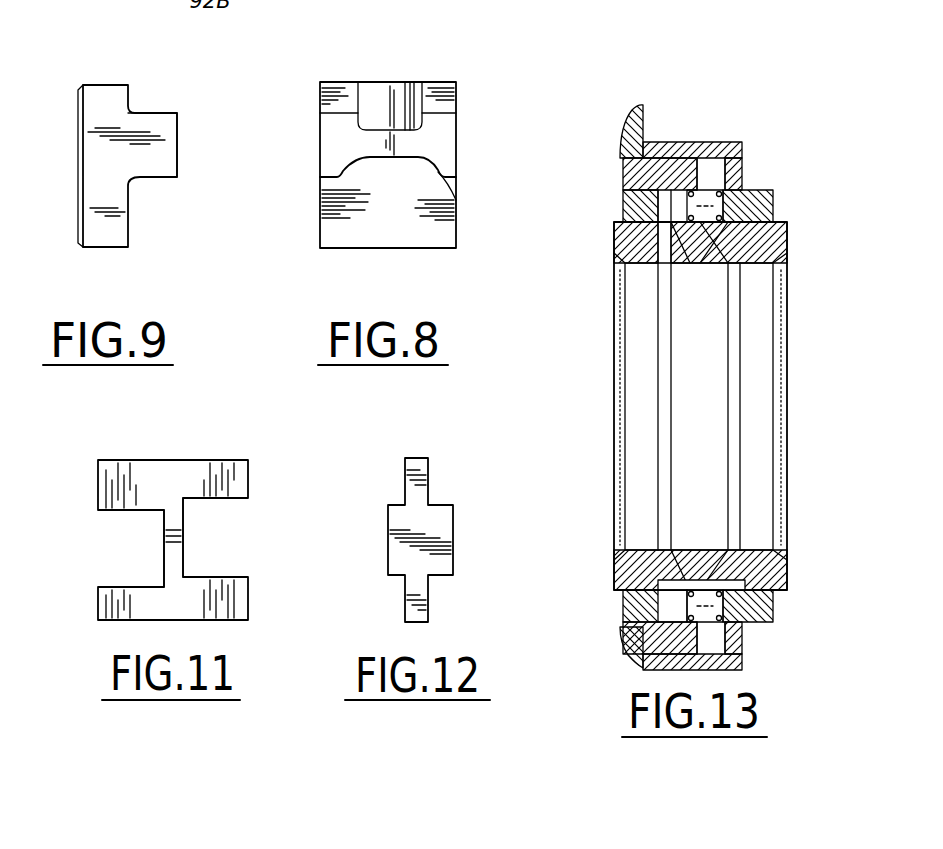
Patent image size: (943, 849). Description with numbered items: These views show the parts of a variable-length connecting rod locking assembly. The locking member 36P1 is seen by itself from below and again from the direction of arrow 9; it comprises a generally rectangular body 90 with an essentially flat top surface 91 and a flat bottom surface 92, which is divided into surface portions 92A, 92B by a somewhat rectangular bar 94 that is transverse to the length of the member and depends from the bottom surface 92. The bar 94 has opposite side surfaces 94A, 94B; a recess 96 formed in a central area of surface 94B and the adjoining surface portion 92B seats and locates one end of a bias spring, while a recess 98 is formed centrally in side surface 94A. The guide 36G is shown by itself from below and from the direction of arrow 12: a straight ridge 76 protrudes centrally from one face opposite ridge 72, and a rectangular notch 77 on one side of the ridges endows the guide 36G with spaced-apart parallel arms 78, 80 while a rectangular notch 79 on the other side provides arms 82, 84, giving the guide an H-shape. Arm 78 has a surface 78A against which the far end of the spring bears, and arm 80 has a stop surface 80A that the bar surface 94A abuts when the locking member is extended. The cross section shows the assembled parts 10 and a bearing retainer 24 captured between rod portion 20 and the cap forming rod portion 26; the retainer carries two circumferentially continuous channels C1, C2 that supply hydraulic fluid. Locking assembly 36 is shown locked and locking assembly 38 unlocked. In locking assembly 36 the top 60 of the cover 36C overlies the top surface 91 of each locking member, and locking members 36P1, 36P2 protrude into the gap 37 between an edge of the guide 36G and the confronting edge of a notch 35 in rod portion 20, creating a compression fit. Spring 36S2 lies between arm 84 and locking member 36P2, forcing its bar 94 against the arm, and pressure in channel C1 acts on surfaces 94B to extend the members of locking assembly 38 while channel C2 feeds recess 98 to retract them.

In FIG. 9, the gasket assembly 10 is at (125, 72).
In FIG. 8, the arrow 9 is at (290, 153).
In FIG. 11, the arrow 12 is at (265, 507).
In FIG. 13, the rod portion 20 is at (638, 112).
In FIG. 13, the bearing retainer 24 is at (788, 272).
In FIG. 13, the rod portion 26 is at (622, 650).
In FIG. 13, the notch 35 is at (635, 180).
In FIG. 13, the locking assembly 36 is at (612, 207).
In FIG. 13, the cover 36C is at (740, 143).
In FIG. 11, the guide 36G is at (176, 456).
In FIG. 12, the guide 36G is at (387, 578).
In FIG. 9, the locking member 36P1 is at (83, 248).
In FIG. 8, the locking member 36P1 is at (458, 250).
In FIG. 13, the locking member 36P2 is at (632, 184).
In FIG. 13, the bias spring 36S2 is at (705, 192).
In FIG. 13, the gap 37 is at (622, 158).
In FIG. 13, the locking assembly 38 is at (602, 595).
In FIG. 13, the top 60 is at (673, 158).
In FIG. 11, the ridge 72 is at (168, 550).
In FIG. 12, the ridge 72 is at (392, 505).
In FIG. 12, the ridge 76 is at (455, 515).
In FIG. 11, the notch 77 is at (237, 543).
In FIG. 11, the arm 78 is at (242, 613).
In FIG. 11, the surface 78A is at (240, 575).
In FIG. 11, the notch 79 is at (113, 525).
In FIG. 11, the arm 80 is at (235, 462).
In FIG. 11, the stop surface 80A is at (237, 500).
In FIG. 11, the arm 82 is at (103, 605).
In FIG. 11, the arm 84 is at (108, 462).
In FIG. 9, the body 90 is at (102, 202).
In FIG. 9, the top surface 91 is at (78, 163).
In FIG. 8, the bottom surface 92 is at (340, 238).
In FIG. 9, the surface portion 92A is at (118, 218).
In FIG. 8, the surface portion 92A is at (408, 225).
In FIG. 9, the surface portion 92B is at (130, 90).
In FIG. 8, the surface portion 92B is at (340, 85).
In FIG. 9, the bar 94 is at (178, 130).
In FIG. 8, the bar 94 is at (328, 167).
In FIG. 13, the bar 94 is at (683, 247).
In FIG. 9, the side surface 94A is at (162, 182).
In FIG. 8, the side surface 94A is at (328, 180).
In FIG. 9, the side surface 94B is at (153, 112).
In FIG. 8, the side surface 94B is at (320, 97).
In FIG. 8, the recess 96 is at (380, 92).
In FIG. 8, the recess 98 is at (397, 170).
In FIG. 13, the channel C1 is at (662, 335).
In FIG. 13, the channel C2 is at (737, 337).